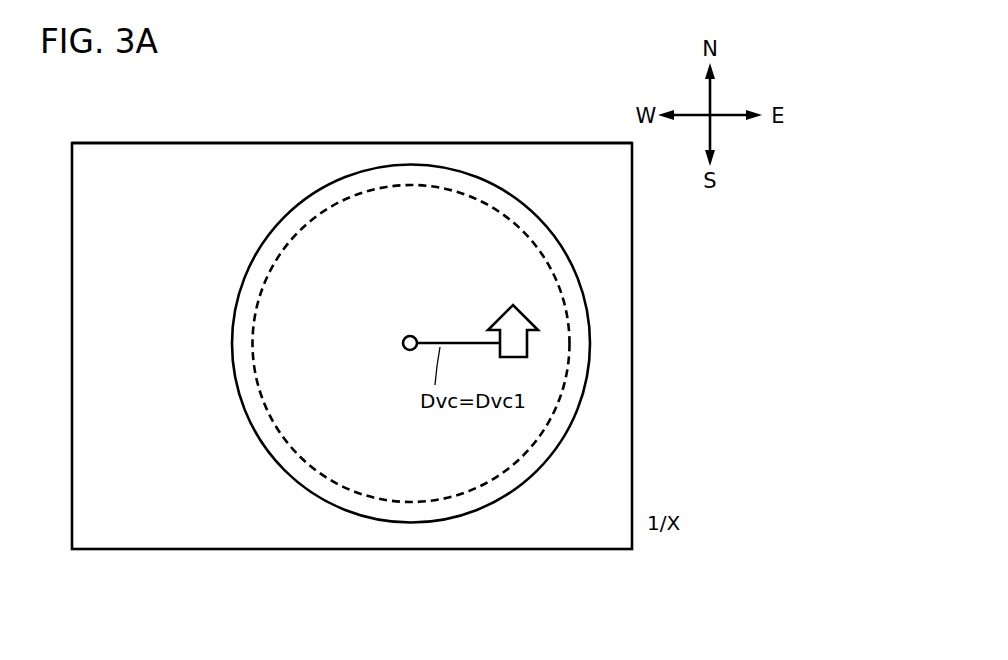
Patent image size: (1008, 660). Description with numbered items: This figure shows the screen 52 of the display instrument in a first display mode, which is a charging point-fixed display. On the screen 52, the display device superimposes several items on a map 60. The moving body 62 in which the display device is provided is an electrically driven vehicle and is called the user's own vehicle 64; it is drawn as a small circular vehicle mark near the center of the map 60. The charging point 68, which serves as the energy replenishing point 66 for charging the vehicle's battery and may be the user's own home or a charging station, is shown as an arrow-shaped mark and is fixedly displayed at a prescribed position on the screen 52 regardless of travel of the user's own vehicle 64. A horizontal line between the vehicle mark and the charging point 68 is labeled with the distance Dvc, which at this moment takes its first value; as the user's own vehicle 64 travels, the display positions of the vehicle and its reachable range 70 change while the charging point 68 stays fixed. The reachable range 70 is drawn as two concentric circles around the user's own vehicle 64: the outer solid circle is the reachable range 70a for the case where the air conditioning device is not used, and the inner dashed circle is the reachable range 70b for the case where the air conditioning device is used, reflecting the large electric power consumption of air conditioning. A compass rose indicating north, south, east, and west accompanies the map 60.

The screen 52 is at (538, 142).
The map 60 is at (199, 180).
The moving body 62 is at (368, 318).
The user's own vehicle 64 is at (406, 337).
The energy replenishing point 66 is at (489, 307).
The charging point 68 is at (508, 311).
The reachable range 70 is at (411, 405).
The reachable range in the case of the air conditioning device not being used 70a is at (440, 522).
The reachable range in the case of the air conditioning device being used 70b is at (400, 502).